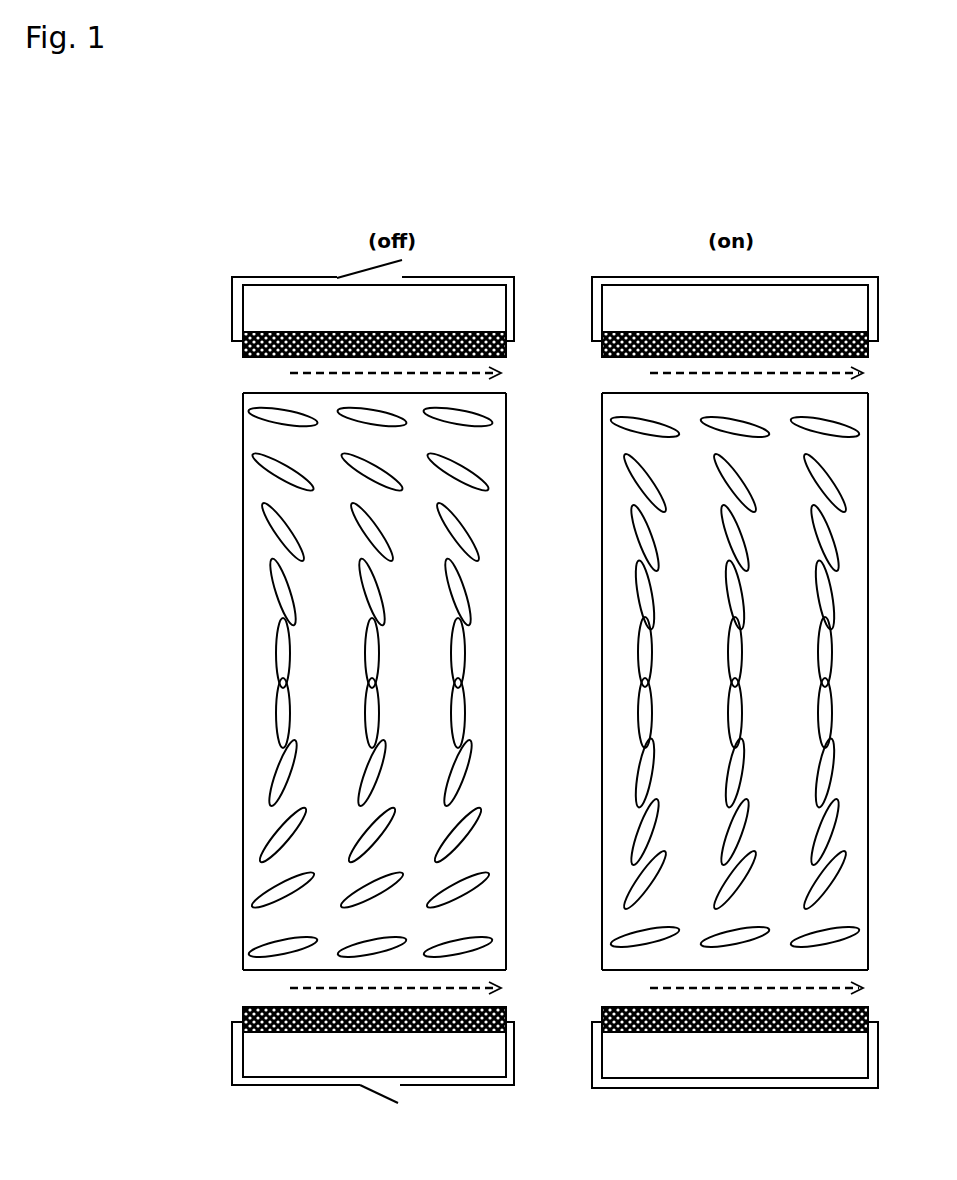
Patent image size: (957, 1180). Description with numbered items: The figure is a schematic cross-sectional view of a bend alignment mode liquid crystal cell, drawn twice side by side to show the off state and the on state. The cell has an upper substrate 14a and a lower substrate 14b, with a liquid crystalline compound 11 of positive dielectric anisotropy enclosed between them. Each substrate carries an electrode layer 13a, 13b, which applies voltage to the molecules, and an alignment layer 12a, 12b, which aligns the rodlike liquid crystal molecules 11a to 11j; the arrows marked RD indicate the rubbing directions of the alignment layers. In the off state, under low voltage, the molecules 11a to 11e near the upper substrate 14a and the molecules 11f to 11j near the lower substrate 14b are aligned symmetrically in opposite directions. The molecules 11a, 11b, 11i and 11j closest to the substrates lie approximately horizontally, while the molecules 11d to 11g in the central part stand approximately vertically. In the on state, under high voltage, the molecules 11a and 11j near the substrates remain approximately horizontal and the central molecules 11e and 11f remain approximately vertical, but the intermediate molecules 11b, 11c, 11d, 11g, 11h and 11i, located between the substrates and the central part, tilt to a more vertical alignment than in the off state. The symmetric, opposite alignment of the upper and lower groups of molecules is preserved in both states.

The liquid crystalline compound 11 is at (612, 680).
The rodlike liquid crystal molecule 11a is at (616, 428).
The rodlike liquid crystal molecule 11b is at (618, 484).
The rodlike liquid crystal molecule 11c is at (618, 542).
The rodlike liquid crystal molecule 11d is at (616, 600).
The rodlike liquid crystal molecule 11e is at (616, 650).
The rodlike liquid crystal molecule 11f is at (616, 726).
The rodlike liquid crystal molecule 11g is at (618, 784).
The rodlike liquid crystal molecule 11h is at (618, 830).
The rodlike liquid crystal molecule 11i is at (618, 876).
The rodlike liquid crystal molecule 11j is at (618, 934).
The alignment layer 12a is at (618, 385).
The alignment layer 12b is at (618, 994).
The electrode layer 13a is at (618, 350).
The electrode layer 13b is at (618, 1022).
The upper substrate 14a is at (618, 316).
The lower substrate 14b is at (620, 1050).